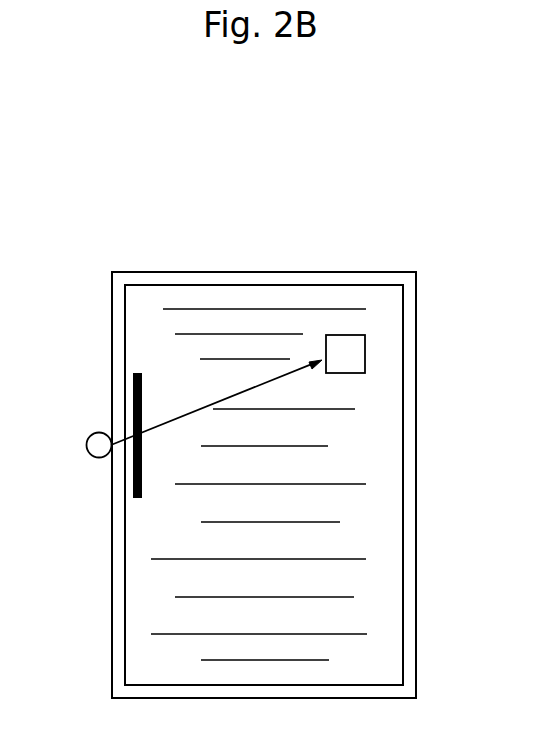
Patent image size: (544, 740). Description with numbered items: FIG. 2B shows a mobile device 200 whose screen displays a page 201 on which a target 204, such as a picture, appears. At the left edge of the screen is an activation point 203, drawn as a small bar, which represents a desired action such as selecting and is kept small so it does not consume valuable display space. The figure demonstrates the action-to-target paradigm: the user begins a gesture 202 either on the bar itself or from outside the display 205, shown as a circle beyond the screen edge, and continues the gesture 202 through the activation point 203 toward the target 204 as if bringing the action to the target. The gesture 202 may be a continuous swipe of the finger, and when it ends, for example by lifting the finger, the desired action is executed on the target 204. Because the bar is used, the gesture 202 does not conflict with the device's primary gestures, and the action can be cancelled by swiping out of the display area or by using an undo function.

The electronic device 200 is at (416, 423).
The page 201 is at (377, 498).
The gesture 202 is at (276, 380).
The activation point 203 is at (133, 384).
The target 204 is at (365, 348).
The outside the display 205 is at (86, 445).